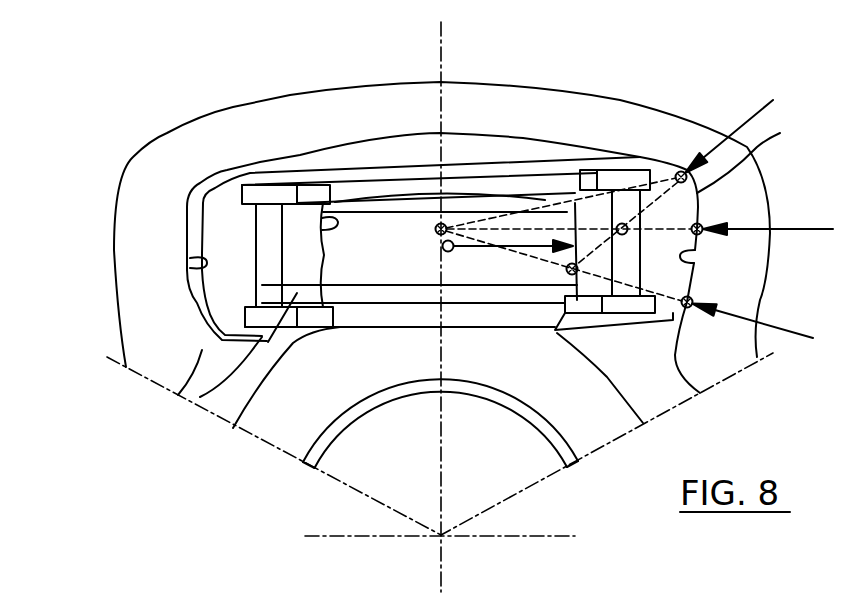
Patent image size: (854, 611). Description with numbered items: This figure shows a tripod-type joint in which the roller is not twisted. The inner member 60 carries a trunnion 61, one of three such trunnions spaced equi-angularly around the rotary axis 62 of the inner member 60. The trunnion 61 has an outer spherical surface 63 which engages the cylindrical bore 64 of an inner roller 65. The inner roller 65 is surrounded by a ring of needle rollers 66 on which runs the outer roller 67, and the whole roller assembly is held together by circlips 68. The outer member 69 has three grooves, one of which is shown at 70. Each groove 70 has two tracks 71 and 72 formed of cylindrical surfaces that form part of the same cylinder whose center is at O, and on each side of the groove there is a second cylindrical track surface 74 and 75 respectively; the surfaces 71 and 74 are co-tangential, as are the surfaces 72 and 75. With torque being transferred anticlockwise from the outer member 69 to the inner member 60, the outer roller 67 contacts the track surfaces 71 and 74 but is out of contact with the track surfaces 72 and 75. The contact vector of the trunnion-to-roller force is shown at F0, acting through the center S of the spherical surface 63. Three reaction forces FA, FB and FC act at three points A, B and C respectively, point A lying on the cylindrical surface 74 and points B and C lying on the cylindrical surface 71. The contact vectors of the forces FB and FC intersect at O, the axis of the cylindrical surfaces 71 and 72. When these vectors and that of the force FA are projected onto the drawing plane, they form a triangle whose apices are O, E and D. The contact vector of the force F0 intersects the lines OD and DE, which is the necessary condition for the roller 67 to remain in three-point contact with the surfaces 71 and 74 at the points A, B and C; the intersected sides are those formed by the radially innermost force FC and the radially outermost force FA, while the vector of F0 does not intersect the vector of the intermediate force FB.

The inner member 60 is at (540, 385).
The trunnion 61 is at (407, 227).
The rotary axis 62 is at (443, 535).
The outer spherical surface 63 is at (255, 290).
The cylindrical bore 64 is at (273, 232).
The inner roller 65 is at (200, 398).
The needle rollers 66 is at (267, 255).
The outer roller 67 is at (225, 200).
The circlips 68 is at (277, 197).
The outer member 69 is at (510, 108).
The groove 70 is at (425, 130).
The track 71 is at (700, 260).
The track 72 is at (190, 262).
The second cylindrical track surface 74 is at (780, 133).
The second cylindrical track surface 75 is at (193, 190).
The center of the spherical surface S is at (440, 236).
The trunnion to roller force F0 is at (508, 256).
The point A is at (677, 163).
The point B is at (690, 219).
The point C is at (682, 290).
The apex D is at (582, 281).
The apex E is at (621, 215).
The reaction force FA is at (729, 134).
The reaction force FB is at (768, 221).
The reaction force FC is at (752, 321).